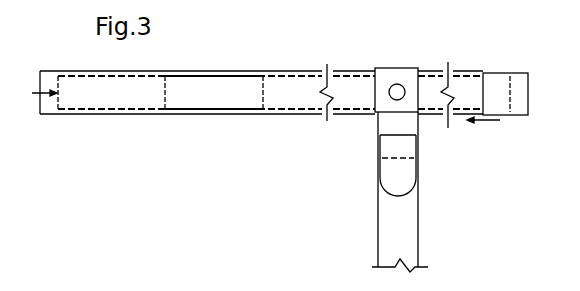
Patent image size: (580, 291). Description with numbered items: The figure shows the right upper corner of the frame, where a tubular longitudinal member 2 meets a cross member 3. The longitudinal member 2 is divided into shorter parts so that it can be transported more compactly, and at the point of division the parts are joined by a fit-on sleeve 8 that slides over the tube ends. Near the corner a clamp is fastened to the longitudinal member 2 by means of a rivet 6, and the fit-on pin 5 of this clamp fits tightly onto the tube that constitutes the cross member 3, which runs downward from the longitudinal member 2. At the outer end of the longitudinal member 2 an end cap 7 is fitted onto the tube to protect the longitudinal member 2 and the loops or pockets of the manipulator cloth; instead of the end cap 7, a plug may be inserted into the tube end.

The longitudinal member 2 is at (342, 85).
The cross member 3 is at (395, 213).
The fit-on pin 5 is at (402, 155).
The rivet 6 is at (400, 87).
The end cap 7 is at (518, 85).
The fit-on sleeve 8 is at (207, 83).